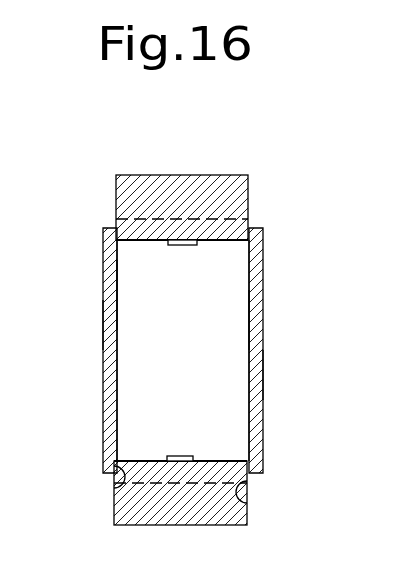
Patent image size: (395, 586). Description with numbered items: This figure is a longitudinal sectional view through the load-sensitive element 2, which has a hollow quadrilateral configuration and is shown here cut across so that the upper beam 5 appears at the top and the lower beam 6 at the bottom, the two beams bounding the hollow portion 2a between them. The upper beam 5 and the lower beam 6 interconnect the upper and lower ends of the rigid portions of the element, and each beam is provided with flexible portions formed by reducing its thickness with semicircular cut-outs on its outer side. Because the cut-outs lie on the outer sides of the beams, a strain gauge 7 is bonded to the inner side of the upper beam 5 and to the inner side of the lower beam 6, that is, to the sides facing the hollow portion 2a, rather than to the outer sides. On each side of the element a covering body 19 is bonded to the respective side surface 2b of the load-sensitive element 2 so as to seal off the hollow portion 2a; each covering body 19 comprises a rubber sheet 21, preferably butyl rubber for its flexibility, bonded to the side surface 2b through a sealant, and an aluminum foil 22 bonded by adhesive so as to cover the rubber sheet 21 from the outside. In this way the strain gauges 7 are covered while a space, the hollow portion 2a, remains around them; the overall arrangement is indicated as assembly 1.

The assembly 1 is at (272, 199).
The load-sensitive element 2 is at (220, 183).
The hollow portion 2a is at (125, 368).
The side surface 2b is at (120, 483).
The upper beam 5 is at (160, 176).
The lower beam 6 is at (173, 516).
The strain gauge 7 is at (180, 246).
The covering body 19 is at (100, 267).
The rubber sheet 21 is at (110, 289).
The aluminum foil 22 is at (103, 325).